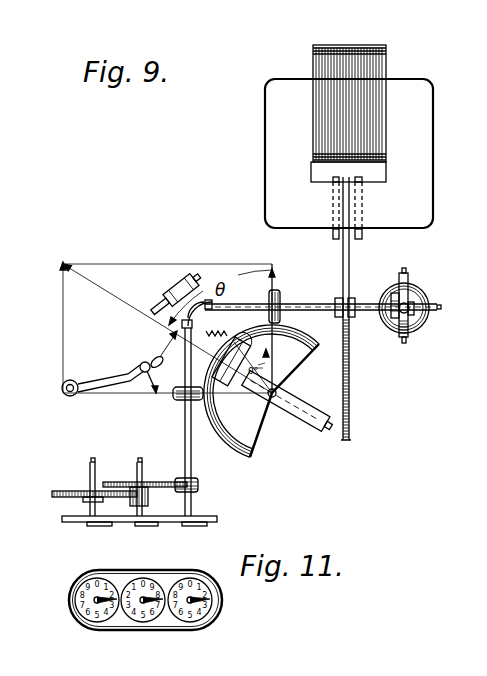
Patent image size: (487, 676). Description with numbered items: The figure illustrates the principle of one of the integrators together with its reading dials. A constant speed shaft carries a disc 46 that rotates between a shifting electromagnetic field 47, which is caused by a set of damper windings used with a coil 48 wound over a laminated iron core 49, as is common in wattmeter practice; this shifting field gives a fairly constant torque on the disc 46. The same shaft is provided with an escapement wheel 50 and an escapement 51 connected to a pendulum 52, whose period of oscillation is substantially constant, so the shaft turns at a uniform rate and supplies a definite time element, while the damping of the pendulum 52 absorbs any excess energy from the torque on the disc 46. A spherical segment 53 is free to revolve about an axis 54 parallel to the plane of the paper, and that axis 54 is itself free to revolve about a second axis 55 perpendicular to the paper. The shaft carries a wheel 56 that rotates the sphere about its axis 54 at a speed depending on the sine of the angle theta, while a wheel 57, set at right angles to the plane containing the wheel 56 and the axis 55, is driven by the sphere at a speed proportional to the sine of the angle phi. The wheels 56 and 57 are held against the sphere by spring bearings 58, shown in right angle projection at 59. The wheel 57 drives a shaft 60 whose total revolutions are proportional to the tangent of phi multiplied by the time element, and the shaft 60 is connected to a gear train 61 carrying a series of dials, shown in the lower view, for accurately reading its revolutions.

The disc 46 is at (344, 279).
The shifting electromagnetic field 47 is at (355, 208).
The coil 48 is at (378, 67).
The laminated iron core 49 is at (433, 125).
The escapement wheel 50 is at (405, 273).
The escapement 51 is at (418, 287).
The pendulum 52 is at (424, 327).
The spherical segment 53 is at (257, 425).
The axis 54 is at (328, 428).
The second axis 55 is at (296, 391).
The wheel 56 is at (281, 297).
The wheel 57 is at (174, 396).
The spring bearings 58 is at (198, 276).
The spring bearings (right angle projection) 59 is at (103, 384).
The shaft 60 is at (193, 463).
The gear train 61 is at (112, 483).